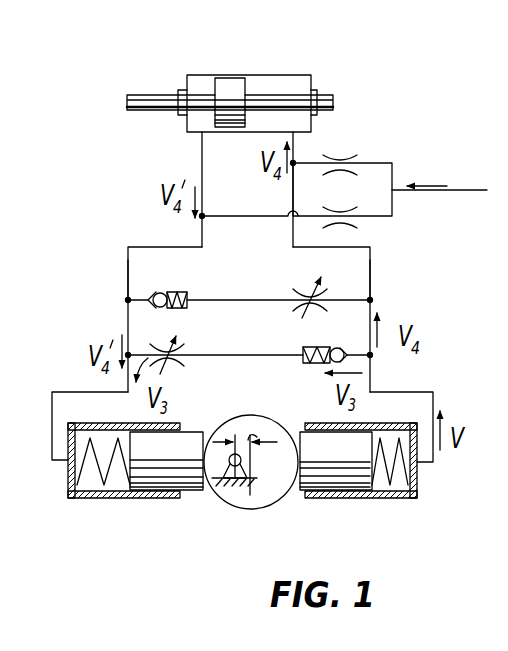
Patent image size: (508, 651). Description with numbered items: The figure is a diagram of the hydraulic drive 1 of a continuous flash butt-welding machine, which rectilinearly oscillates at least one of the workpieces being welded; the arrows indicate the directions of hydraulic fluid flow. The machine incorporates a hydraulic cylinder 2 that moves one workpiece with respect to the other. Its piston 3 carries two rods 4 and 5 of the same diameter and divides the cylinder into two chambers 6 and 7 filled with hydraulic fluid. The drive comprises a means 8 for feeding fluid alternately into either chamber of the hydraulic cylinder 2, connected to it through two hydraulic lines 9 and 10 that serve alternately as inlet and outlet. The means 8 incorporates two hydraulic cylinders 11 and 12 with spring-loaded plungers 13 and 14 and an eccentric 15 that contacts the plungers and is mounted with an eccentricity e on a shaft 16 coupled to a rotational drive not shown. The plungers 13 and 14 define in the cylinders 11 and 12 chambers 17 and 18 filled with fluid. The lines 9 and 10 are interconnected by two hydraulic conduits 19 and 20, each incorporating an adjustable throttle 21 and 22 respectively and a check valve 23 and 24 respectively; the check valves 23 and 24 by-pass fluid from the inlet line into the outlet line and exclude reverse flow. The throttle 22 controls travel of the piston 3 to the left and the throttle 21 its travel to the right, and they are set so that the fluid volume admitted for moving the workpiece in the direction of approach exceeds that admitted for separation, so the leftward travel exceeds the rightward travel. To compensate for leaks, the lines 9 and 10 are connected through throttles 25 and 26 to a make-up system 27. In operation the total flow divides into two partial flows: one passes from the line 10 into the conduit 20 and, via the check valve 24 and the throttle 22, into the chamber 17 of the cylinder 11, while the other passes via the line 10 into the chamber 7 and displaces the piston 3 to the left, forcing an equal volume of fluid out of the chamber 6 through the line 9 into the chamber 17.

The hydraulic drive 1 is at (143, 238).
The hydraulic cylinder 2 is at (268, 62).
The piston 3 is at (236, 78).
The rod 4 is at (150, 95).
The rod 5 is at (334, 101).
The chamber 6 is at (203, 75).
The chamber 7 is at (305, 76).
The means for feeding hydraulic fluid 8 is at (240, 492).
The hydraulic line 9 is at (127, 272).
The hydraulic line 10 is at (371, 268).
The hydraulic cylinder 11 is at (117, 498).
The hydraulic cylinder 12 is at (357, 498).
The spring-loaded plunger 13 is at (152, 482).
The spring-loaded plunger 14 is at (323, 482).
The eccentric 15 is at (257, 501).
The shaft 16 is at (242, 462).
The chamber 17 is at (87, 498).
The chamber 18 is at (402, 483).
The hydraulic conduit 19 is at (238, 293).
The hydraulic conduit 20 is at (278, 362).
The adjustable throttle 21 is at (300, 315).
The adjustable throttle 22 is at (160, 367).
The check valve 23 is at (170, 292).
The check valve 24 is at (325, 347).
The throttle 25 is at (342, 210).
The throttle 26 is at (347, 157).
The make-up system 27 is at (468, 204).